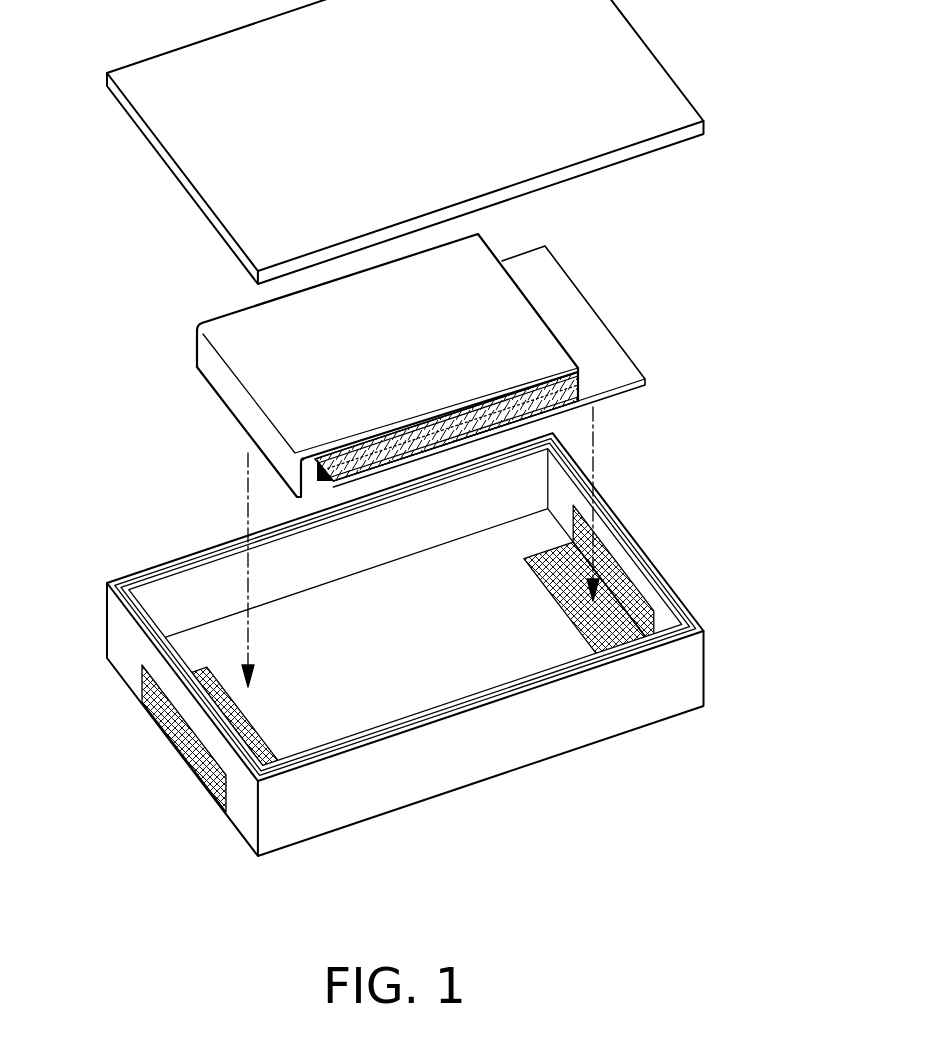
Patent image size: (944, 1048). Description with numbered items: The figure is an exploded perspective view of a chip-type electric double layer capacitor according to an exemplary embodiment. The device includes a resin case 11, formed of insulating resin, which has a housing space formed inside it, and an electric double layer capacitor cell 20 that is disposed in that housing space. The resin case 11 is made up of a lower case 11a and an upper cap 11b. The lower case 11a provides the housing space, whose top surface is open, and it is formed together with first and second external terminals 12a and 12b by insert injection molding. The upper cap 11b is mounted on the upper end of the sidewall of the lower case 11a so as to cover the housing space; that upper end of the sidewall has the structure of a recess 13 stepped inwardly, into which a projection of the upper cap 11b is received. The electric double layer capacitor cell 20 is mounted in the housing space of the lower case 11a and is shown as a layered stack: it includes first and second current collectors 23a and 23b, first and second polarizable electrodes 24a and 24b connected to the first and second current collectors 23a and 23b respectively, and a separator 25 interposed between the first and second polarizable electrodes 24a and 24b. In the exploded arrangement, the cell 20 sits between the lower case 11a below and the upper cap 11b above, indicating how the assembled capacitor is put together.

The resin case 11 is at (803, 83).
The lower case 11a is at (693, 682).
The upper cap 11b is at (667, 92).
The first external terminal 12a is at (617, 633).
The second external terminal 12b is at (176, 746).
The recess 13 is at (647, 545).
The electric double layer capacitor cell 20 is at (172, 351).
The first current collector 23a is at (252, 435).
The second current collector 23b is at (593, 328).
The first polarizable electrode 24a is at (587, 378).
The second polarizable electrode 24b is at (587, 397).
The separator 25 is at (587, 387).